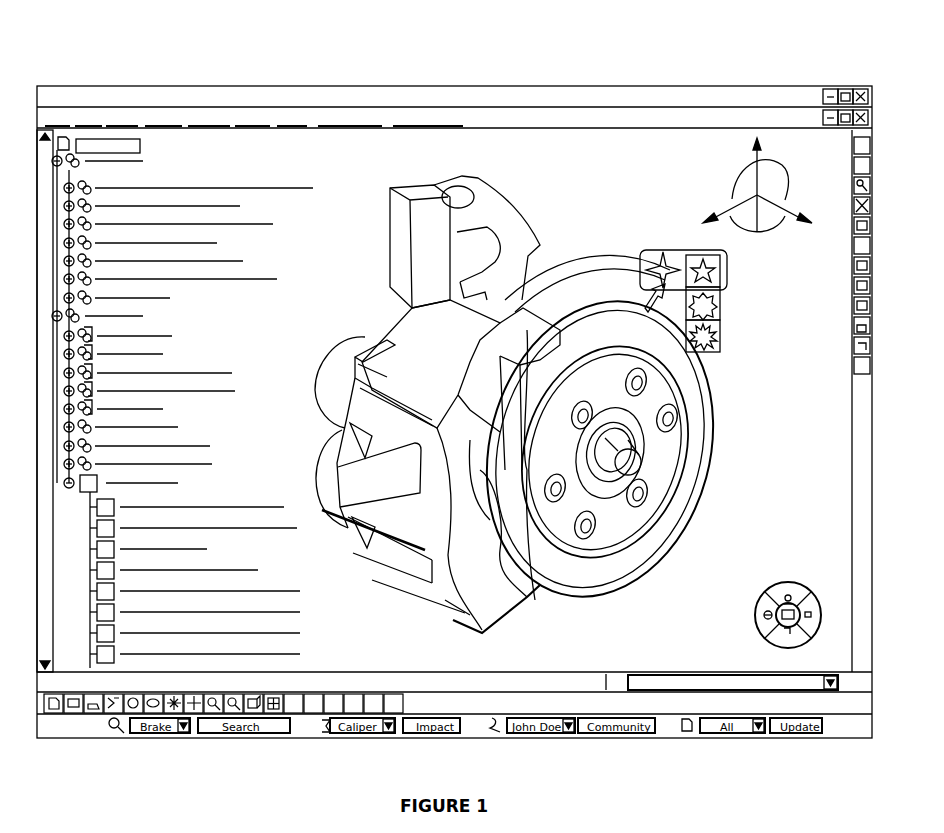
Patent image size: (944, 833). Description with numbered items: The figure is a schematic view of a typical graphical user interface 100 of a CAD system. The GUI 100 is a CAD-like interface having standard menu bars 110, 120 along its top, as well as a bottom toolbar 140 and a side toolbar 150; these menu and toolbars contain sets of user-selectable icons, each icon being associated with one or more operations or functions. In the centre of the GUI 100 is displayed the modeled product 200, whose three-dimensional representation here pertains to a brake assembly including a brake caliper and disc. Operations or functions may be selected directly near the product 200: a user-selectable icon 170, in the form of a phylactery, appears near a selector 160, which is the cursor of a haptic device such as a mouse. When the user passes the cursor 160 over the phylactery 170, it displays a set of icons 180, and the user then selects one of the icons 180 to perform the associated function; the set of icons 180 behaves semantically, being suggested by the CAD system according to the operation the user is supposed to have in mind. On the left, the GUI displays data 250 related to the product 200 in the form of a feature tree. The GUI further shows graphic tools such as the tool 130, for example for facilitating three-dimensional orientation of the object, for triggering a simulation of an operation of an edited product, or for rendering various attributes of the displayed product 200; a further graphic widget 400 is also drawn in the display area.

The graphical user interface 100 is at (697, 603).
The menu bar 110 is at (557, 86).
The menu bar 120 is at (637, 122).
The graphic tool 130 is at (772, 223).
The bottom toolbar 140 is at (468, 658).
The side toolbar 150 is at (850, 394).
The selector 160 is at (705, 354).
The user-selectable icon 170 is at (672, 253).
The set of icons 180 is at (712, 300).
The modeled product 200 is at (412, 345).
The data 250 is at (158, 387).
The navigation widget 400 is at (775, 568).